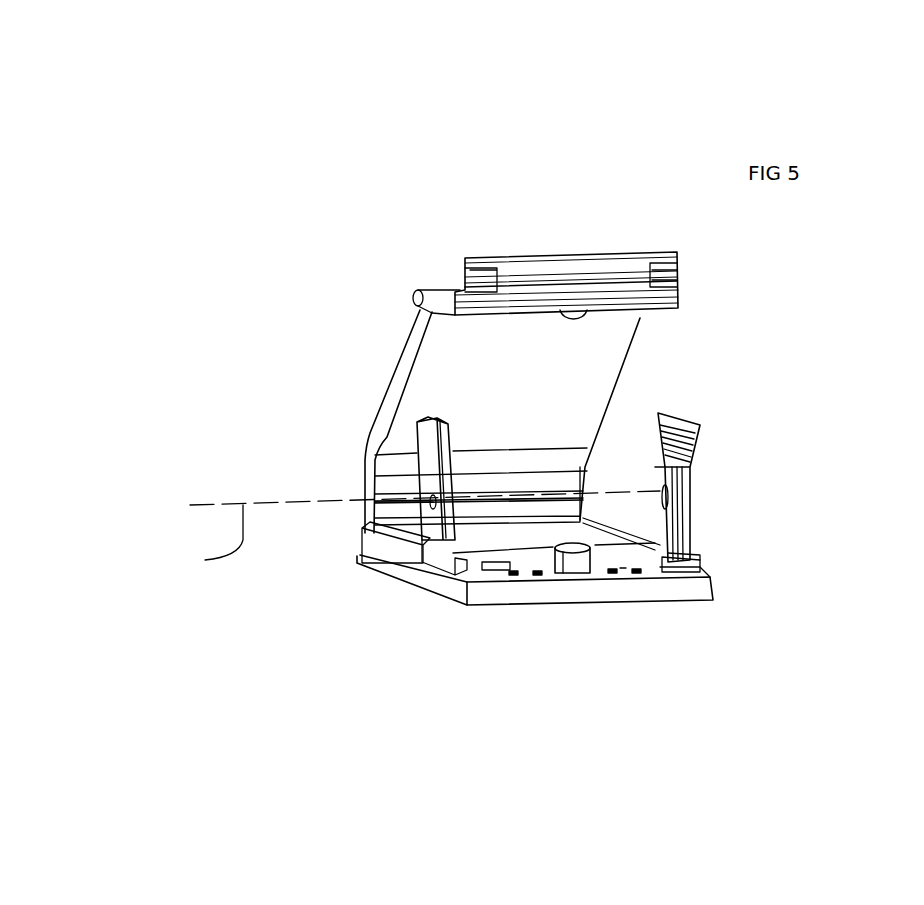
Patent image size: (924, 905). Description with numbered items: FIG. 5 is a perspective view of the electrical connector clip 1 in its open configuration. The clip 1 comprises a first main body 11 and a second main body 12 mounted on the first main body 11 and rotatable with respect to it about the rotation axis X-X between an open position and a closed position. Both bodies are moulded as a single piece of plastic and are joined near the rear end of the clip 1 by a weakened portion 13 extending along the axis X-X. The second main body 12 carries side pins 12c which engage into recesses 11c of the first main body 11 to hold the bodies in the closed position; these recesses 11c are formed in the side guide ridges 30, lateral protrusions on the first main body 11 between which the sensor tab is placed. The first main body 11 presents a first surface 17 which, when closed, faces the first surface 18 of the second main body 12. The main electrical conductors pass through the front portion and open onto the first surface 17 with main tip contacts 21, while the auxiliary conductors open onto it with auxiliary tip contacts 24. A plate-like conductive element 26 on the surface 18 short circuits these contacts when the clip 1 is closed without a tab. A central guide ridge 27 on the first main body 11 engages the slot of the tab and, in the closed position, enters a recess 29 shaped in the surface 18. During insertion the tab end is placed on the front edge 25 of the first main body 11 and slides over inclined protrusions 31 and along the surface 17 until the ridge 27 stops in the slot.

The electrical connector clip 1 is at (418, 212).
The first main body 11 is at (430, 604).
The recesses 11c is at (430, 512).
The second main body 12 is at (380, 407).
The side pins 12c is at (428, 280).
The weakened portion 13 is at (367, 497).
The first surface 17 is at (690, 557).
The first surface 18 is at (642, 320).
The main tip contacts 21 is at (527, 580).
The auxiliary tip contacts 24 is at (605, 580).
The front edge 25 is at (625, 587).
The conductive element 26 is at (652, 317).
The central guide ridge 27 is at (557, 555).
The recess 29 is at (591, 305).
The side guide ridges 30 is at (415, 568).
The inclined protrusions 31 is at (497, 572).